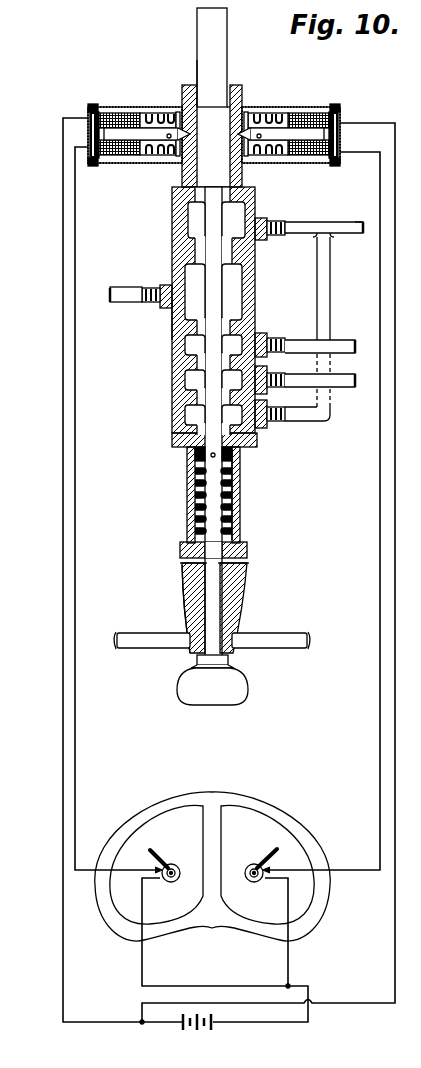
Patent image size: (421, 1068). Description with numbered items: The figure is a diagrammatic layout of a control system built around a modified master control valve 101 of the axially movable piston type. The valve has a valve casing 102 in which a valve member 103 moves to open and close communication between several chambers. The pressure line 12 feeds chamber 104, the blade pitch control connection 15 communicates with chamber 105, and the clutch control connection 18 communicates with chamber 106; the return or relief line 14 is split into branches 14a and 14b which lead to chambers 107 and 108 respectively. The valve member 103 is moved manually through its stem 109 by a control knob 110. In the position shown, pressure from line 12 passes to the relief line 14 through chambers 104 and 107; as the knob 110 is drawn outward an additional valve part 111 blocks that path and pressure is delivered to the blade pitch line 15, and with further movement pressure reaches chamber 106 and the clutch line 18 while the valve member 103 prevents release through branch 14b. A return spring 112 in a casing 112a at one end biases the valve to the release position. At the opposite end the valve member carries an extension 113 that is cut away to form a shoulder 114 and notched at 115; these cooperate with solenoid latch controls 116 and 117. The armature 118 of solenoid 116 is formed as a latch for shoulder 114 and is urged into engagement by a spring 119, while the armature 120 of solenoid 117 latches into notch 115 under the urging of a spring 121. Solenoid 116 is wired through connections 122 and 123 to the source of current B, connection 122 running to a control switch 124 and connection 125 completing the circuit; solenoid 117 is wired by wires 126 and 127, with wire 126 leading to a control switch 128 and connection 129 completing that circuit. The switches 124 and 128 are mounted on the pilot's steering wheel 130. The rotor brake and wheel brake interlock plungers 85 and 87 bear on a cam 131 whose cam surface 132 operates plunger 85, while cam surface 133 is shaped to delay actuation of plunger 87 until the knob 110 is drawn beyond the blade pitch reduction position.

The extension 113 is at (213, 97).
The notch 115 is at (197, 70).
The shoulder 114 is at (243, 97).
The solenoid latch control 117 is at (116, 112).
The spring 121 is at (158, 120).
The armature 120 is at (150, 146).
The solenoid latch control 116 is at (305, 112).
The spring 119 is at (290, 160).
The armature 118 is at (258, 145).
The master control valve 101 is at (166, 404).
The chamber 108 is at (255, 434).
The valve member 103 is at (225, 330).
The additional valve part 111 is at (198, 220).
The chamber 104 is at (192, 280).
The chamber 105 is at (192, 346).
The chamber 106 is at (192, 380).
The valve casing 102 is at (180, 325).
The chamber 107 is at (238, 214).
The pressure line 12 is at (114, 298).
The relief line branch 14a is at (287, 238).
The return or relief line 14 is at (351, 236).
The relief line branch 14b is at (322, 419).
The blade pitch control connection 15 is at (345, 343).
The clutch control connection 18 is at (343, 387).
The return spring 112 is at (190, 484).
The spring casing 112a is at (240, 500).
The stem 109 is at (216, 483).
The cam 131 is at (184, 568).
The cam surface 132 is at (184, 608).
The cam surface 133 is at (238, 588).
The rotor brake interlock plunger 85 is at (156, 632).
The wheel brake interlock plunger 87 is at (286, 632).
The control knob 110 is at (178, 690).
The wire 127 is at (63, 594).
The wire 126 is at (75, 552).
The connection 122 is at (380, 243).
The connection 123 is at (395, 290).
The connection 129 is at (142, 957).
The connection 125 is at (288, 957).
The source of current B is at (197, 1034).
The steering wheel 130 is at (258, 814).
The control switch 128 is at (178, 864).
The control switch 124 is at (256, 883).